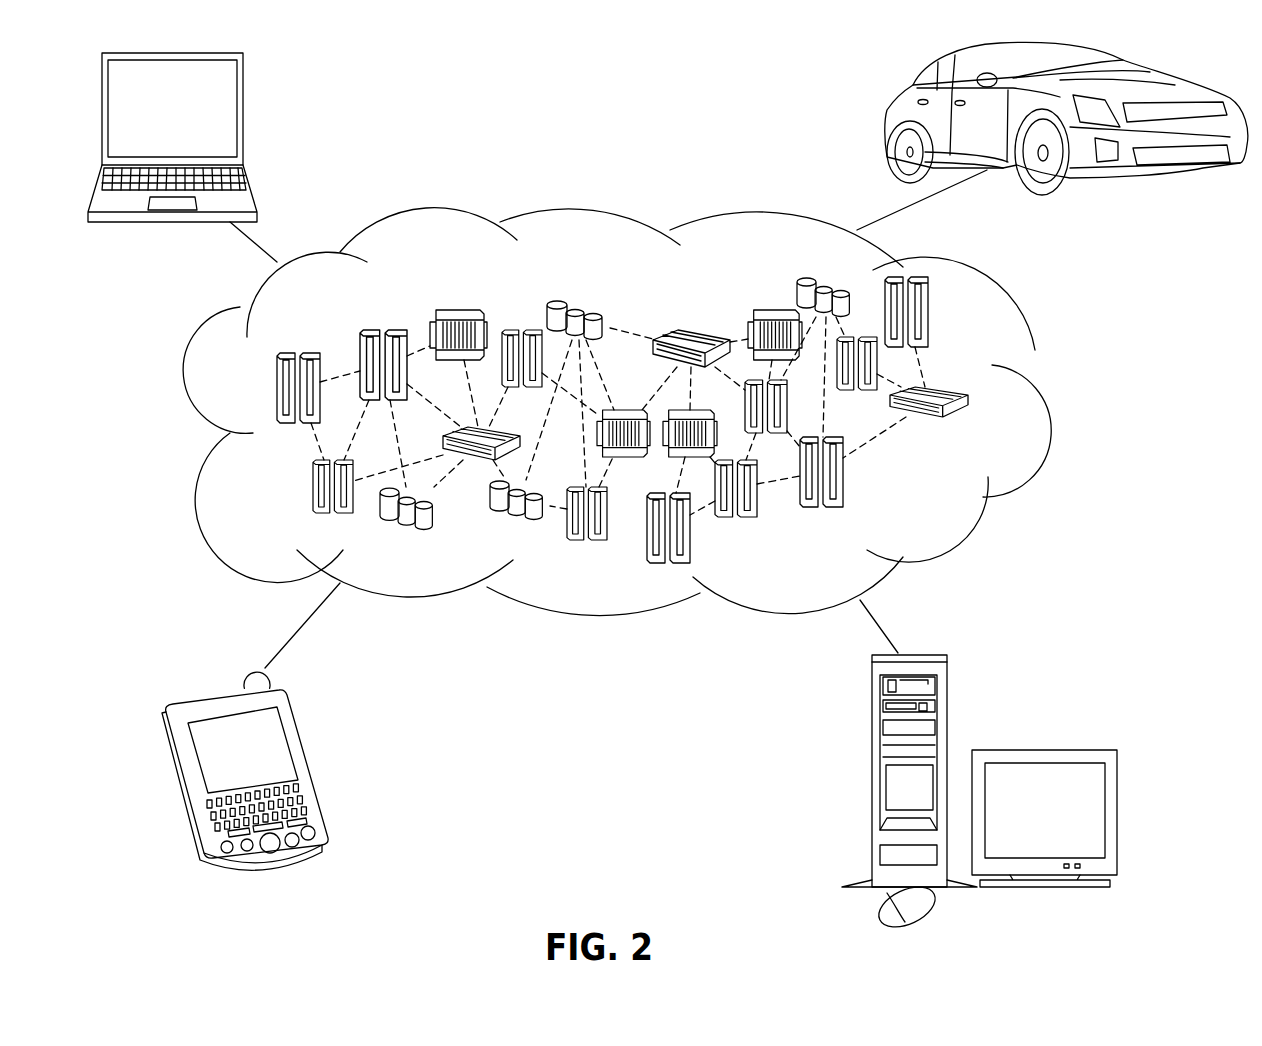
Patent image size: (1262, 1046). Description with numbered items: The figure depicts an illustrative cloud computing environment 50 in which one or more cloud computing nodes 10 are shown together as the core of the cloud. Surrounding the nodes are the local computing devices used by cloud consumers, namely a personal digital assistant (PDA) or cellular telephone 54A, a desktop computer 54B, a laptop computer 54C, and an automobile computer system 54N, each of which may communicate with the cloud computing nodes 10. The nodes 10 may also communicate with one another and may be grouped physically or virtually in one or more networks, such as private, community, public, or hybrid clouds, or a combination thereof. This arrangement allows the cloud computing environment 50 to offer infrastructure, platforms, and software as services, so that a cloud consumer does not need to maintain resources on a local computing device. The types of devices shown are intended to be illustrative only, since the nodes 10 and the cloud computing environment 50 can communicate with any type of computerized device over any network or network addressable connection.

The cloud computing nodes 10 is at (952, 507).
The cloud computing environment 50 is at (1037, 400).
The personal digital assistant (PDA) or cellular telephone 54A is at (297, 730).
The desktop computer 54B is at (872, 715).
The laptop computer 54C is at (243, 92).
The automobile computer system 54N is at (890, 107).